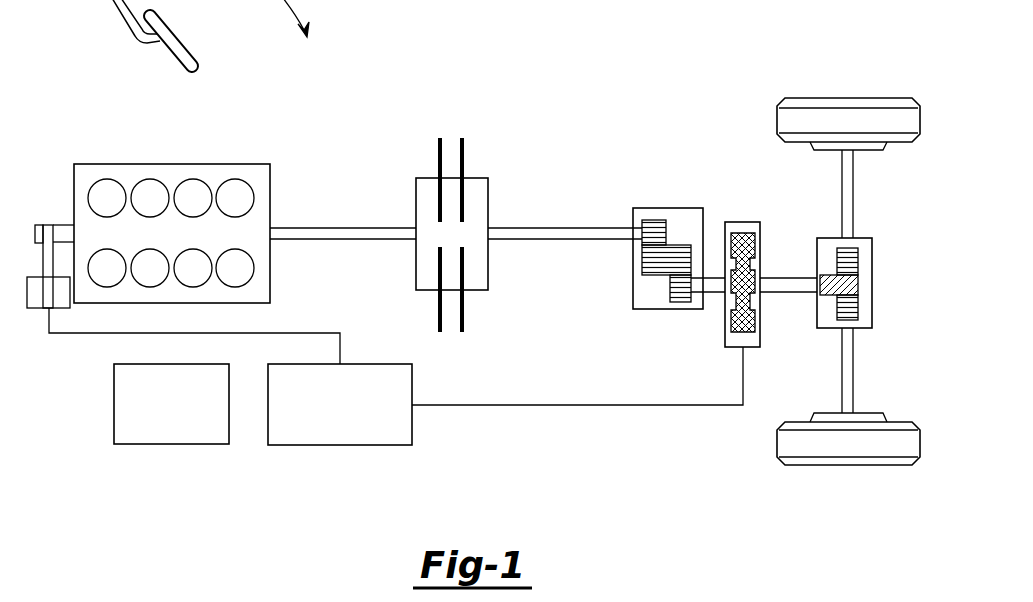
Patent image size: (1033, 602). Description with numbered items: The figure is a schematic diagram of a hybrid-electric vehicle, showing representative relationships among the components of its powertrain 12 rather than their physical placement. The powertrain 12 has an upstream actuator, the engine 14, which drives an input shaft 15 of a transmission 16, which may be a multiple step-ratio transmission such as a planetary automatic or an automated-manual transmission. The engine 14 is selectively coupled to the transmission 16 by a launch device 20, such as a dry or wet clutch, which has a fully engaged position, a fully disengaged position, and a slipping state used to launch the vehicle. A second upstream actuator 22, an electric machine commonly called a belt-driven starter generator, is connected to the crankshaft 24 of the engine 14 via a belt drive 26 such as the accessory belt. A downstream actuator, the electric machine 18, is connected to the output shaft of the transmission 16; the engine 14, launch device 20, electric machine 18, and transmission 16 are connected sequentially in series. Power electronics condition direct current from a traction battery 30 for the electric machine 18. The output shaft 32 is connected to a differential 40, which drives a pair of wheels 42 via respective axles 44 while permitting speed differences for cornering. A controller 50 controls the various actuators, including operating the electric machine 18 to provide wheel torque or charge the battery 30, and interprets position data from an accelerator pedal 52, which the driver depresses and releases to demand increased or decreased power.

The powertrain 12 is at (722, 90).
The engine 14 is at (107, 180).
The input shaft 15 is at (580, 226).
The transmission 16 is at (668, 208).
The electric machine 18 is at (743, 222).
The launch device 20 is at (438, 155).
The second upstream actuator 22 is at (27, 290).
The crankshaft 24 is at (358, 226).
The belt drive 26 is at (43, 258).
The traction battery 30 is at (358, 364).
The output shaft 32 is at (797, 277).
The differential 40 is at (860, 305).
The wheels 42 is at (848, 98).
The axles 44 is at (854, 366).
The controller 50 is at (114, 422).
The accelerator pedal 52 is at (112, 15).